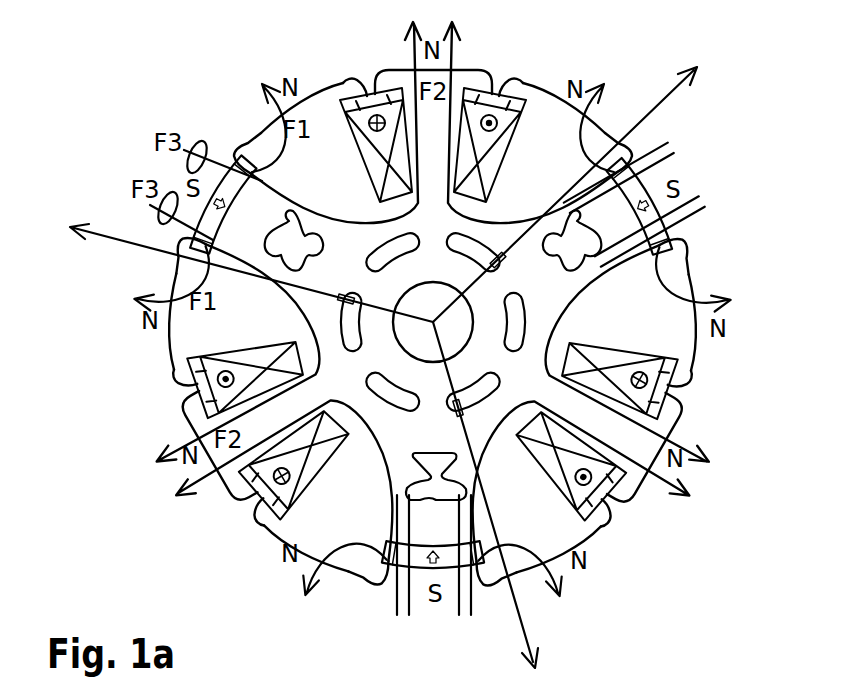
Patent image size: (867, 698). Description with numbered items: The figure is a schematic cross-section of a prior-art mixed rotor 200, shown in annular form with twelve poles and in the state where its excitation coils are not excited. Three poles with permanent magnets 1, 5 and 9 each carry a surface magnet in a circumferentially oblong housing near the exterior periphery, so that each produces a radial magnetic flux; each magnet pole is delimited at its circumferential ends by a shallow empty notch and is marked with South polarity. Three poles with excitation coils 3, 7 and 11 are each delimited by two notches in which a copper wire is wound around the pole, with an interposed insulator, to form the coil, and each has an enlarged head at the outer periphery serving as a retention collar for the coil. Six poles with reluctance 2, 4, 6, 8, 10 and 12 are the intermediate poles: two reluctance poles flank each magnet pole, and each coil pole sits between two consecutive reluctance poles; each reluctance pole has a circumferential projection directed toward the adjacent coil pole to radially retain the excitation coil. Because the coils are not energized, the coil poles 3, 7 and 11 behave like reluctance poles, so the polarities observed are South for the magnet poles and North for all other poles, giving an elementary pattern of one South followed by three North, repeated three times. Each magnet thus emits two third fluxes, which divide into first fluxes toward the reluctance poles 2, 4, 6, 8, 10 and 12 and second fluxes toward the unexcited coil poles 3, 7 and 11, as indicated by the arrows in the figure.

The pole with permanent magnet 1 is at (240, 160).
The pole with reluctance 2 is at (333, 95).
The pole with excitation coil 3 is at (402, 72).
The pole with reluctance 4 is at (533, 97).
The pole with permanent magnet 5 is at (673, 243).
The pole with reluctance 6 is at (680, 365).
The pole with excitation coil 7 is at (662, 425).
The pole with reluctance 8 is at (580, 523).
The pole with permanent magnet 9 is at (483, 568).
The pole with reluctance 10 is at (287, 518).
The pole with excitation coil 11 is at (180, 420).
The pole with reluctance 12 is at (183, 345).
The mixed rotor 200 is at (623, 53).